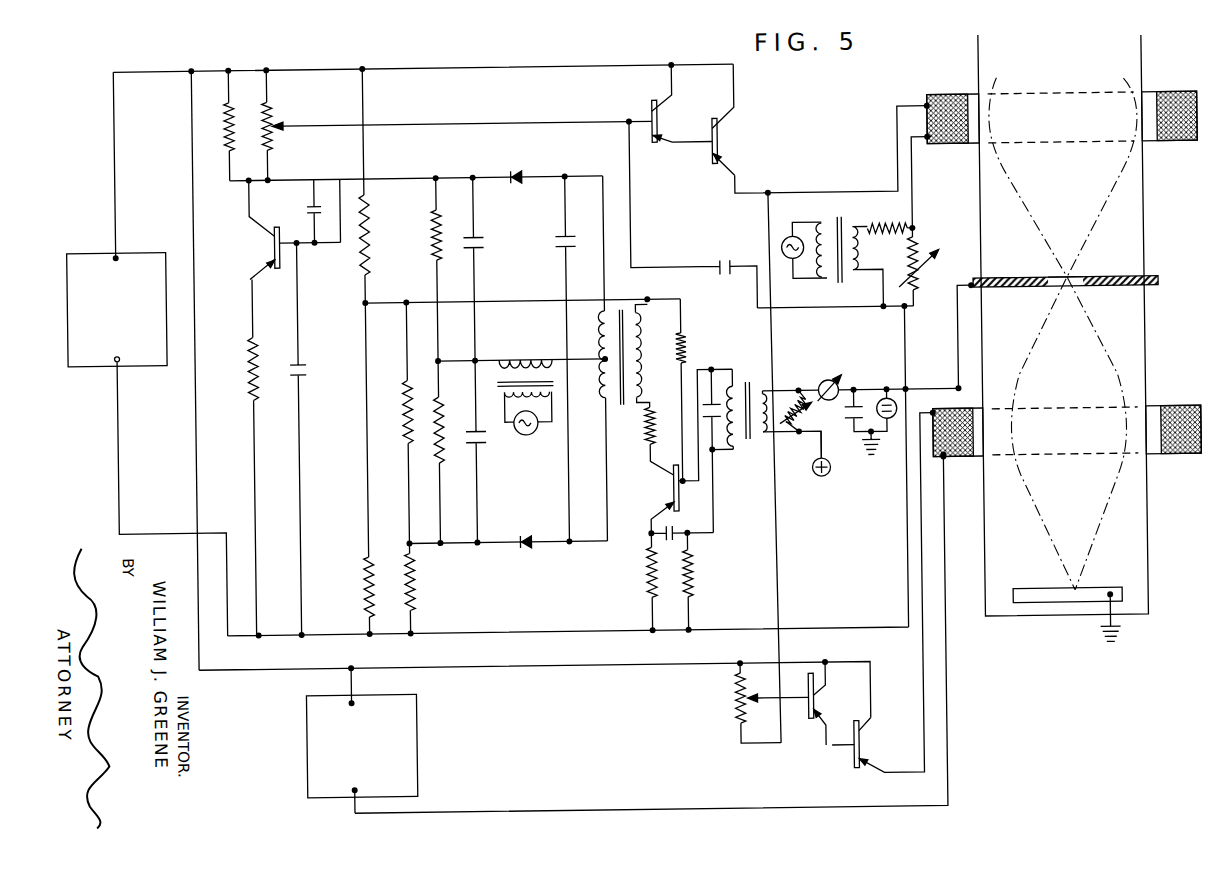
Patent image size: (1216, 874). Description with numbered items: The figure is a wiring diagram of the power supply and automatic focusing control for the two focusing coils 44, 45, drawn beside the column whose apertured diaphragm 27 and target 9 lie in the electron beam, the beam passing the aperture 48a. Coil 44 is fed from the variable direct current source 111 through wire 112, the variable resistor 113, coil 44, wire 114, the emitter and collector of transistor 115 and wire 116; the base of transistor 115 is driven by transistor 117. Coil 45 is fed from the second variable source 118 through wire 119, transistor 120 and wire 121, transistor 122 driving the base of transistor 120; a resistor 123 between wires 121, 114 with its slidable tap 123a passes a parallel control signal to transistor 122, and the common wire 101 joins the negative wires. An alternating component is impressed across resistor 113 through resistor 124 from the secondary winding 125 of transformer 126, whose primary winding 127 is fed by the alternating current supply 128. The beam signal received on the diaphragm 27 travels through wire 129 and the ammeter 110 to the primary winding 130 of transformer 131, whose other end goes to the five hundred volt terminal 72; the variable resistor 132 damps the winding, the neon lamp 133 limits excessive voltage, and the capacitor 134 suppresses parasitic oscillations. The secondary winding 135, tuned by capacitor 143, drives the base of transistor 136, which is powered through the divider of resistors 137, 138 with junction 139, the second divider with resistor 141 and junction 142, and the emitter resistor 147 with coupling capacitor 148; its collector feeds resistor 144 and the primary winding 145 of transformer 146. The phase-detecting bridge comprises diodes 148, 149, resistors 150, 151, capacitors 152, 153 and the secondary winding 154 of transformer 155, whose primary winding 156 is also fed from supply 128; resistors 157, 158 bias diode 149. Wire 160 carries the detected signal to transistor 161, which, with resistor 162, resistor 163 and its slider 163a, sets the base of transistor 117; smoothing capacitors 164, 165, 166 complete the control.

The target plate 9 is at (1051, 608).
The diaphragm 27 is at (1160, 282).
The focusing coil 44 is at (955, 97).
The focusing coil 45 is at (960, 442).
The aperture 48a is at (1082, 293).
The terminal 72 is at (826, 461).
The common wire 101 is at (194, 432).
The ammeter 110 is at (822, 380).
The direct current source 111 is at (67, 248).
The wire 112 is at (533, 629).
The variable resistor 113 is at (940, 258).
The wire 114 is at (820, 193).
The transistor 115 is at (722, 149).
The wire 116 is at (528, 64).
The transistor 117 is at (667, 122).
The direct current supply 118 is at (303, 706).
The wire 119 is at (616, 808).
The transistor 120 is at (857, 748).
The wire 121 is at (598, 668).
The transistor 122 is at (805, 716).
The resistor 123 is at (734, 700).
The slidable tap 123a is at (767, 705).
The resistor 124 is at (889, 227).
The secondary winding 125 is at (862, 252).
The transformer 126 is at (844, 224).
The primary winding 127 is at (818, 226).
The alternating current supply 128 is at (533, 433).
The wire 129 is at (958, 331).
The primary winding 130 is at (772, 388).
The transformer 131 is at (750, 384).
The variable resistor 132 is at (770, 396).
The neon lamp 133 is at (866, 390).
The capacitor 134 is at (845, 420).
The secondary winding 135 is at (727, 368).
The transistor 136 is at (670, 490).
The fixed resistor 137 is at (362, 592).
The fixed resistor 138 is at (363, 258).
The common junction 139 is at (364, 300).
The resistor 141 is at (692, 580).
The common junction 142 is at (712, 536).
The capacitor 143 is at (722, 453).
The resistor 144 is at (647, 443).
The primary winding 145 is at (642, 369).
The transformer 146 is at (628, 320).
The resistor 147 is at (604, 345).
The capacitor 148 is at (529, 170).
The diode 149 is at (528, 547).
The resistor 150 is at (434, 228).
The resistor 151 is at (462, 398).
The capacitor 152 is at (486, 242).
The capacitor 153 is at (486, 440).
The transformer secondary winding 154 is at (524, 357).
The transformer 155 is at (484, 352).
The primary winding 156 is at (500, 425).
The resistor 157 is at (403, 408).
The resistor 158 is at (414, 588).
The wire 160 is at (343, 183).
The transistor 161 is at (275, 242).
The fixed resistor 162 is at (228, 118).
The resistor 163 is at (275, 112).
The slider 163a is at (300, 121).
The smoothing capacitor 164 is at (412, 545).
The smoothing capacitor 165 is at (304, 362).
The smoothing capacitor 166 is at (310, 206).